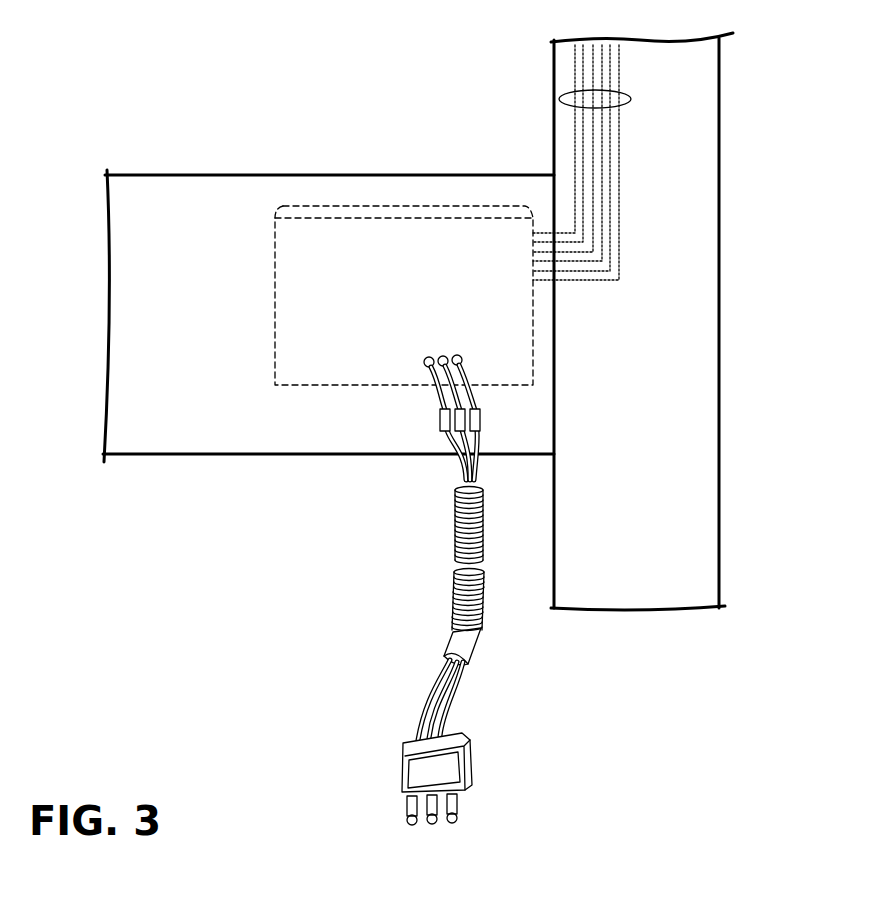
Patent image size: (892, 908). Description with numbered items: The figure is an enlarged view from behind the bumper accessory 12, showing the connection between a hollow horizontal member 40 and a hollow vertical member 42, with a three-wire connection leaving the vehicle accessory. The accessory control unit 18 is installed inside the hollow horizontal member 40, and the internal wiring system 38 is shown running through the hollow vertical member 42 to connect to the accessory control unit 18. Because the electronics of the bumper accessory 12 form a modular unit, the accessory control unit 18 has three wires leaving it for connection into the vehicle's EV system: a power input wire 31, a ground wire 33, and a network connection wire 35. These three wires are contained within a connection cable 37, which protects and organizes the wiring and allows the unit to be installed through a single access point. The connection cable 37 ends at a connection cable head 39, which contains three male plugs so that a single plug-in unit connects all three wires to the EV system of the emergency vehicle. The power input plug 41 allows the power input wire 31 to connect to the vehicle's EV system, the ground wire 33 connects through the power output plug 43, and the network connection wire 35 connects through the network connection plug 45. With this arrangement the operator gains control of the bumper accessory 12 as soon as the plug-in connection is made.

The bumper accessory 12 is at (690, 311).
The vertical member 42 is at (705, 178).
The horizontal member 40 is at (236, 197).
The accessory control unit 18 is at (368, 243).
The internal wiring system 38 is at (560, 103).
The ground wire 33 is at (456, 447).
The network connection wire 35 is at (463, 458).
The power input wire 31 is at (482, 450).
The connection cable 37 is at (447, 541).
The connection cable head 39 is at (467, 767).
The network connection plug 45 is at (410, 828).
The power output plug 43 is at (432, 828).
The power input plug 41 is at (451, 826).